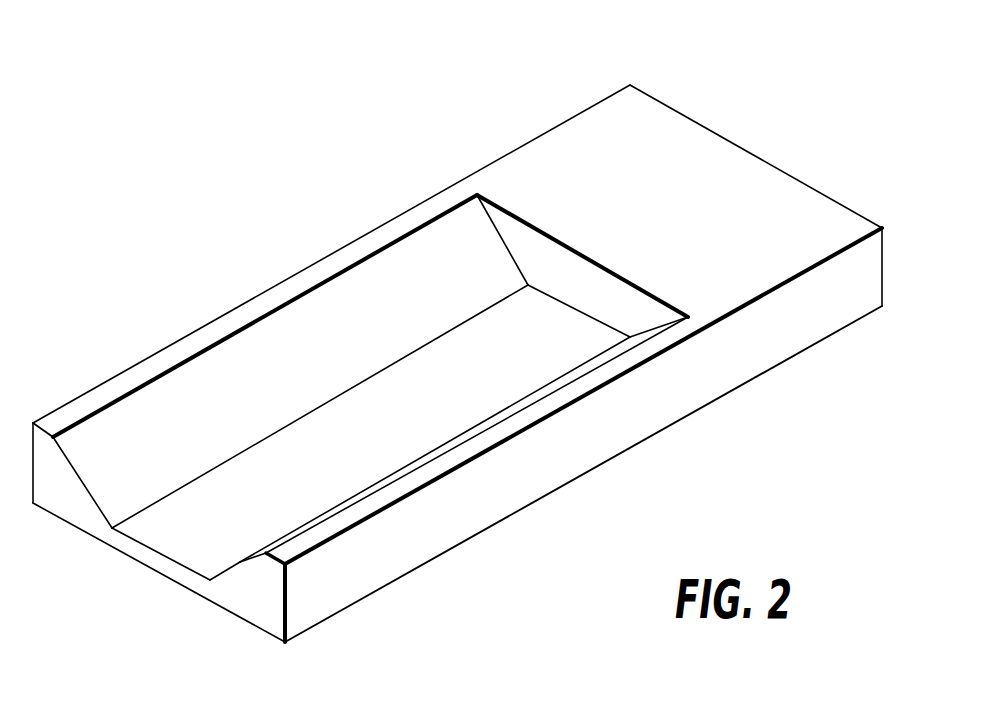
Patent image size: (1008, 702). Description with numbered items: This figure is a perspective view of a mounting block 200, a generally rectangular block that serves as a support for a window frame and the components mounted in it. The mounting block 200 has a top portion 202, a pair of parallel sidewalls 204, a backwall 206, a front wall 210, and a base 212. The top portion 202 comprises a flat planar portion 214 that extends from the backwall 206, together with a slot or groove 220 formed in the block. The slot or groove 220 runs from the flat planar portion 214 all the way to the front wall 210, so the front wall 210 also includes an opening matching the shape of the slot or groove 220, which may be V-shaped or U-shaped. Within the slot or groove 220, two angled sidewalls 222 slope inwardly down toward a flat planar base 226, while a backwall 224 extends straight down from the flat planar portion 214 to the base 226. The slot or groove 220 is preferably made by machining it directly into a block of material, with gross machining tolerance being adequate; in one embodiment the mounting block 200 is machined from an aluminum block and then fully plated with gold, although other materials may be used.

The mounting block 200 is at (272, 217).
The top portion 202 is at (561, 169).
The parallel sidewalls 204 is at (214, 346).
The backwall 206 is at (814, 184).
The front wall 210 is at (248, 590).
The base 212 is at (435, 560).
The flat planar portion 214 is at (647, 155).
The slot or groove 220 is at (199, 514).
The angled sidewalls 222 is at (214, 419).
The backwall of slot 224 is at (607, 298).
The flat planar base 226 is at (364, 459).